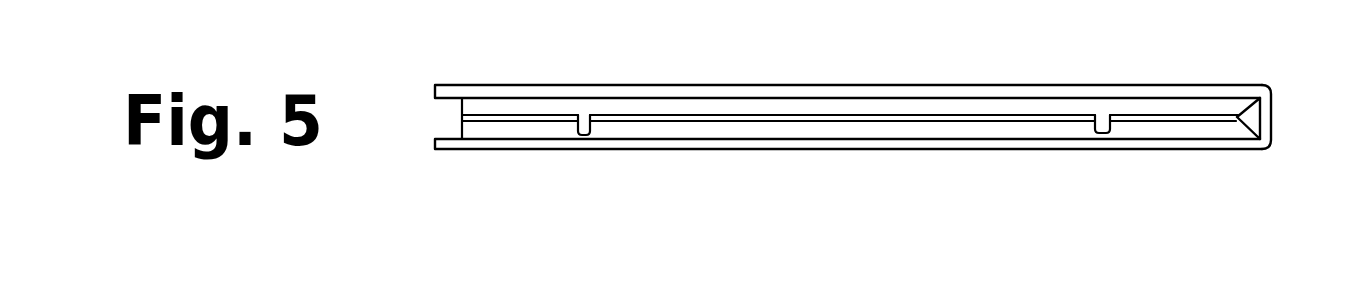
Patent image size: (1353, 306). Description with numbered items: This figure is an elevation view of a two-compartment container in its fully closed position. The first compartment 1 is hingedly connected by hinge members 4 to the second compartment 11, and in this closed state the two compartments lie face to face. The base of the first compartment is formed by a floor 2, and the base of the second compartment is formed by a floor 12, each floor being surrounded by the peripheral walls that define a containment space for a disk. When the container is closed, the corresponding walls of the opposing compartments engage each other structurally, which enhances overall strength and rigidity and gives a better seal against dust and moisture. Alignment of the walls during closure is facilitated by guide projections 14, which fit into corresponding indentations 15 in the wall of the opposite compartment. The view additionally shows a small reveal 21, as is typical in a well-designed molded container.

The first compartment 1 is at (864, 125).
The floor 2 is at (897, 105).
The hinge members 4 is at (1270, 85).
The second compartment 11 is at (753, 128).
The floor 12 is at (662, 145).
The guide projections 14 is at (573, 128).
The indentations 15 is at (590, 138).
The reveal 21 is at (1157, 118).